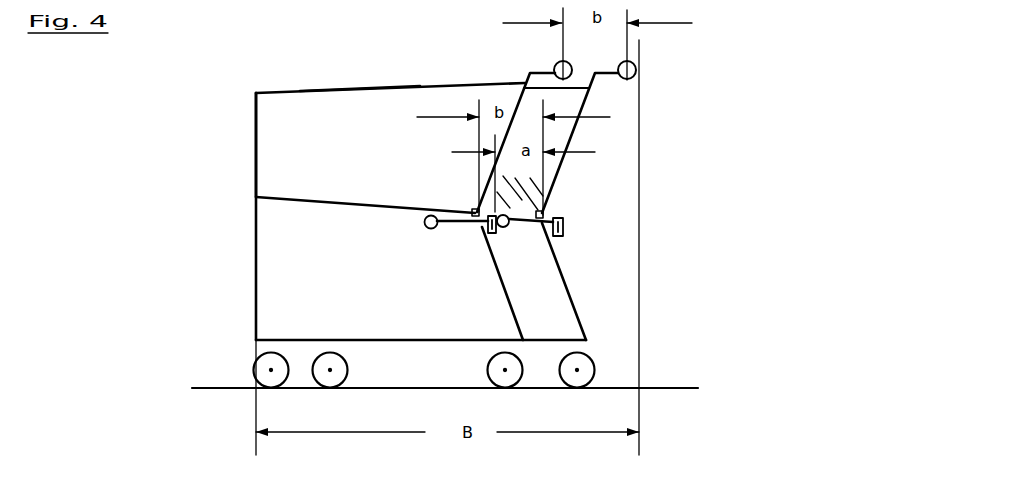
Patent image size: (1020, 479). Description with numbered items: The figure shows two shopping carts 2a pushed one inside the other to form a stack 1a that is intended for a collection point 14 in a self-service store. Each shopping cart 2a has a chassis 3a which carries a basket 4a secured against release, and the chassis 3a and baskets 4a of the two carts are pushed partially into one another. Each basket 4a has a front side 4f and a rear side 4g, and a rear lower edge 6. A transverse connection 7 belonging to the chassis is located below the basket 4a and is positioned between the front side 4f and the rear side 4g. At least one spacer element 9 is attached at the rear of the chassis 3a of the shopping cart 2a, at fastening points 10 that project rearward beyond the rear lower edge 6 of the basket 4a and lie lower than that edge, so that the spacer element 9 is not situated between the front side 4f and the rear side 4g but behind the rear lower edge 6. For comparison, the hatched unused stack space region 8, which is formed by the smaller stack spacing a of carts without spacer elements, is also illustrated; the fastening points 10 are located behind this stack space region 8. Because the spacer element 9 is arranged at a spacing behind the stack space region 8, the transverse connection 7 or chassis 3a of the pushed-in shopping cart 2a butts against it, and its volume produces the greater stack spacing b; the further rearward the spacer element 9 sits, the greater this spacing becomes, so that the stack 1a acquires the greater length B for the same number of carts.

The collection point 14 is at (110, 183).
The stack 1a is at (222, 100).
The shopping cart 2a is at (238, 227).
The chassis 3a is at (567, 302).
The basket 4a is at (347, 103).
The front side 4f is at (253, 128).
The rear side 4g is at (557, 181).
The rear lower edge 6 is at (471, 210).
The transverse connection 7 is at (424, 222).
The unused stack space region 8 is at (522, 192).
The spacer element 9 is at (486, 232).
The stopper 10 is at (534, 250).